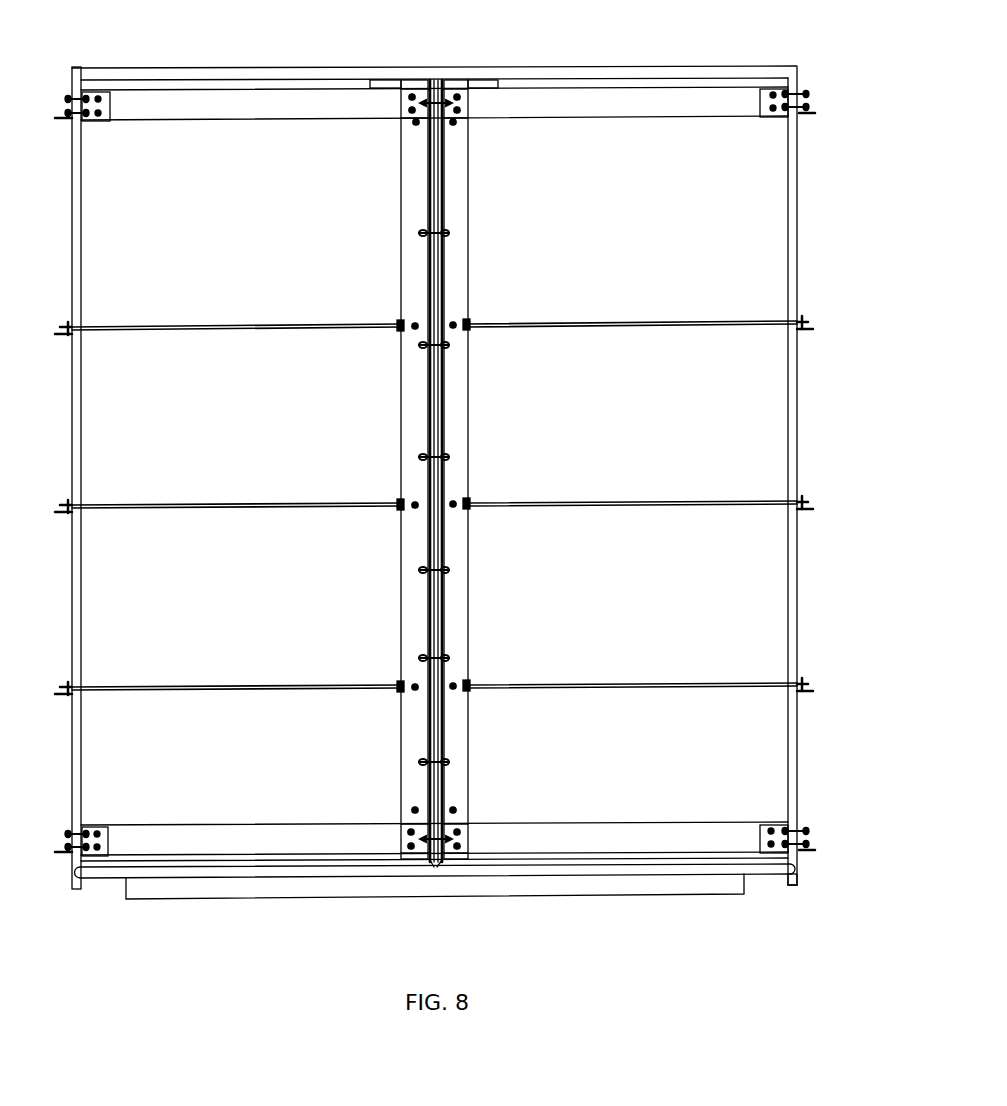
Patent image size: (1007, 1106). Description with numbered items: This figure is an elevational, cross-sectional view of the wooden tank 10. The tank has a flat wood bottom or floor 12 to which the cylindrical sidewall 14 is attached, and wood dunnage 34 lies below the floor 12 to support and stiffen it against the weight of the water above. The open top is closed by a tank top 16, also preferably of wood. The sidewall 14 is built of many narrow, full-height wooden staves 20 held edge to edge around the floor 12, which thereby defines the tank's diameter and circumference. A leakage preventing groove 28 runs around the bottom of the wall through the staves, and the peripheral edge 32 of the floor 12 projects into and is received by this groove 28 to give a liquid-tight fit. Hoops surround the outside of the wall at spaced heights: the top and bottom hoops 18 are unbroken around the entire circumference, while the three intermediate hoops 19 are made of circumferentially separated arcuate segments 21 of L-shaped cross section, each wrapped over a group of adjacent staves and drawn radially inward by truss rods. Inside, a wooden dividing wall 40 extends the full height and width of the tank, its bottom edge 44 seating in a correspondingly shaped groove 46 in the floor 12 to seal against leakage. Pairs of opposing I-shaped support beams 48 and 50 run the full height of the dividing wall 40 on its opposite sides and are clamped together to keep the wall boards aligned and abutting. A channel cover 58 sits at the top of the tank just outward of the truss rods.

The tank 10 is at (812, 204).
The tank bottom or floor 12 is at (587, 874).
The sidewall 14 is at (799, 412).
The tank top 16 is at (633, 73).
The unbroken hoops 18 is at (698, 93).
The intermediate hoops 19 is at (803, 320).
The wooden stave 20 is at (800, 458).
The arcuate hoop segment 21 is at (808, 330).
The leakage preventing groove 28 is at (797, 868).
The peripheral edge of the tank floor 32 is at (799, 880).
The wood dunnage 34 is at (682, 898).
The dividing wall 40 is at (437, 205).
The bottom edge of the dividing wall 44 is at (437, 867).
The groove in the floor 46 is at (433, 867).
The I-shaped support beam 48 is at (400, 268).
The I-shaped support beam 50 is at (467, 268).
The channel cover 58 is at (488, 82).